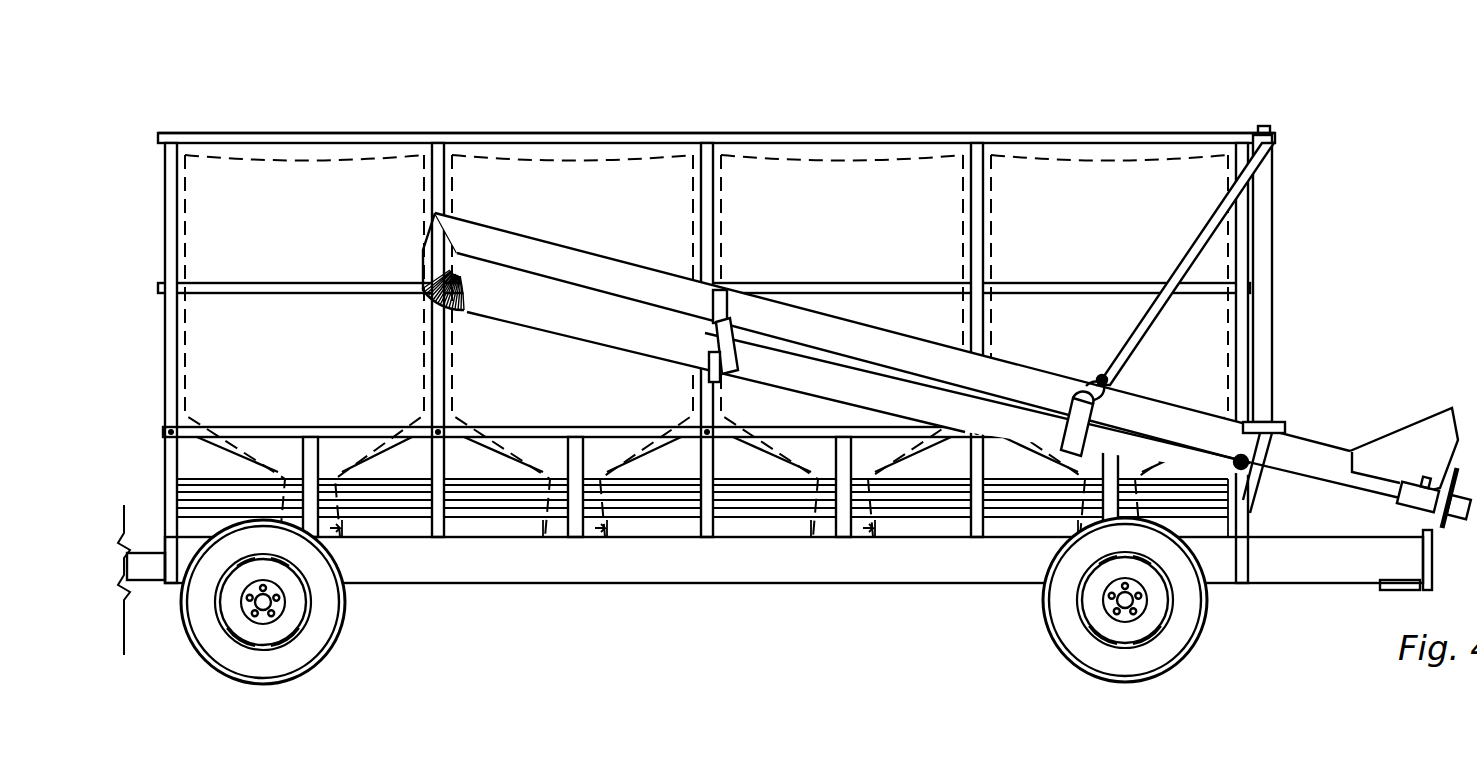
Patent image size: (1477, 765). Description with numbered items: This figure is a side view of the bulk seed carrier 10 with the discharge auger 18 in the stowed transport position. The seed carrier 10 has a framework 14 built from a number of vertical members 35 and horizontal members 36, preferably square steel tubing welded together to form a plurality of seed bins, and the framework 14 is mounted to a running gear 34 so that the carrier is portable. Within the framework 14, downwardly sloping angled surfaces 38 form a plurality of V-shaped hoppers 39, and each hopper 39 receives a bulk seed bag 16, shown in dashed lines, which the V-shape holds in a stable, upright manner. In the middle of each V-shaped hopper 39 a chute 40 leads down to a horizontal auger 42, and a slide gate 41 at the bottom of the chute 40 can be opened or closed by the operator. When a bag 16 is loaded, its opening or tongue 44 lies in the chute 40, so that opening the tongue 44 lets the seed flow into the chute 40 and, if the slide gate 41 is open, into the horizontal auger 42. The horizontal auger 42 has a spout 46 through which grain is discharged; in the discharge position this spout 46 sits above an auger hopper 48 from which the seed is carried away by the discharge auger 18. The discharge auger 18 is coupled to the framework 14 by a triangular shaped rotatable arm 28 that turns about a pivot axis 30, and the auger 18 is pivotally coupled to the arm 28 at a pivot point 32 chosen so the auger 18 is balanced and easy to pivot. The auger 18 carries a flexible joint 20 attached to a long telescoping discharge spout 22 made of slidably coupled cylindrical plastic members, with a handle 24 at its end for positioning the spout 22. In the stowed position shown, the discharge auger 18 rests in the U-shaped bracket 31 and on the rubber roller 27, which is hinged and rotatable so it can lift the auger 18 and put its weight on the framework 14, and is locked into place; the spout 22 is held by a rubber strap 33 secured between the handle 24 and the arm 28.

The bulk seed carrier 10 is at (484, 110).
The framework 14 is at (405, 130).
The bulk seed bag 16 is at (346, 163).
The discharge auger 18 is at (882, 342).
The flexible joint 20 is at (440, 300).
The telescoping discharge spout 22 is at (706, 368).
The handle 24 is at (1068, 404).
The rubber roller 27 is at (1236, 442).
The rotatable arm 28 is at (1146, 330).
The pivot axis 30 is at (1268, 115).
The U-shaped bracket 31 is at (735, 292).
The pivot point 32 is at (1102, 374).
The rubber strap 33 is at (1090, 383).
The running gear 34 is at (232, 660).
The vertical members 35 is at (167, 188).
The horizontal members 36 is at (333, 133).
The angled surfaces 38 is at (238, 455).
The V-shaped hopper 39 is at (270, 115).
The chute 40 is at (536, 520).
The slide gate 41 is at (346, 540).
The horizontal auger 42 is at (746, 585).
The tongue 44 is at (350, 538).
The spout 46 is at (1394, 592).
The auger hopper 48 is at (1412, 436).